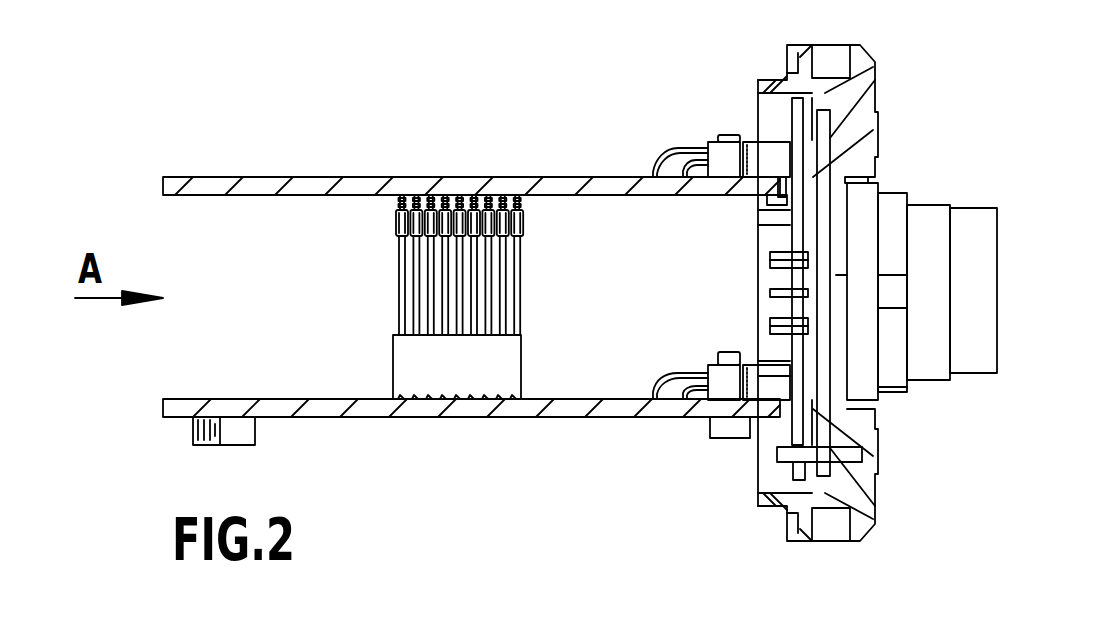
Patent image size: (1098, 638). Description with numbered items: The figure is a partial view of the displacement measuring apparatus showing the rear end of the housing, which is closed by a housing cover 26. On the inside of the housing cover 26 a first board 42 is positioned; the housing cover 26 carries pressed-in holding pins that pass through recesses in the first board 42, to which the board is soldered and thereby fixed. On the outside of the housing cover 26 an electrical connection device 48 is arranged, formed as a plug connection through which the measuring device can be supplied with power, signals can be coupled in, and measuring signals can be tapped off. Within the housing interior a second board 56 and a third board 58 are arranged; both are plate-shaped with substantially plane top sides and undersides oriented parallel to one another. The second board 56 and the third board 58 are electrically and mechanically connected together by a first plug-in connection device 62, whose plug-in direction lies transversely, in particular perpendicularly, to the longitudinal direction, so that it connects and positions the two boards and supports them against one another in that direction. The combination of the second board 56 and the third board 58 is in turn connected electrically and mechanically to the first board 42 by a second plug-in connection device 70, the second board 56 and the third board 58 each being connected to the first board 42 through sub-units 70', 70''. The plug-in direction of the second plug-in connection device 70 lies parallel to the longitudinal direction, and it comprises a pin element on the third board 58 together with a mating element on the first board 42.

The housing cover 26 is at (855, 118).
The first board 42 is at (795, 128).
The electrical connection device 48 is at (978, 350).
The second board 56 is at (478, 412).
The third board 58 is at (493, 184).
The first plug-in connection device 62 is at (548, 281).
The second plug-in connection device 70 is at (735, 305).
The sub-unit of the second plug-in connection device 70' is at (859, 421).
The sub-unit of the second plug-in connection device 70'' is at (867, 156).